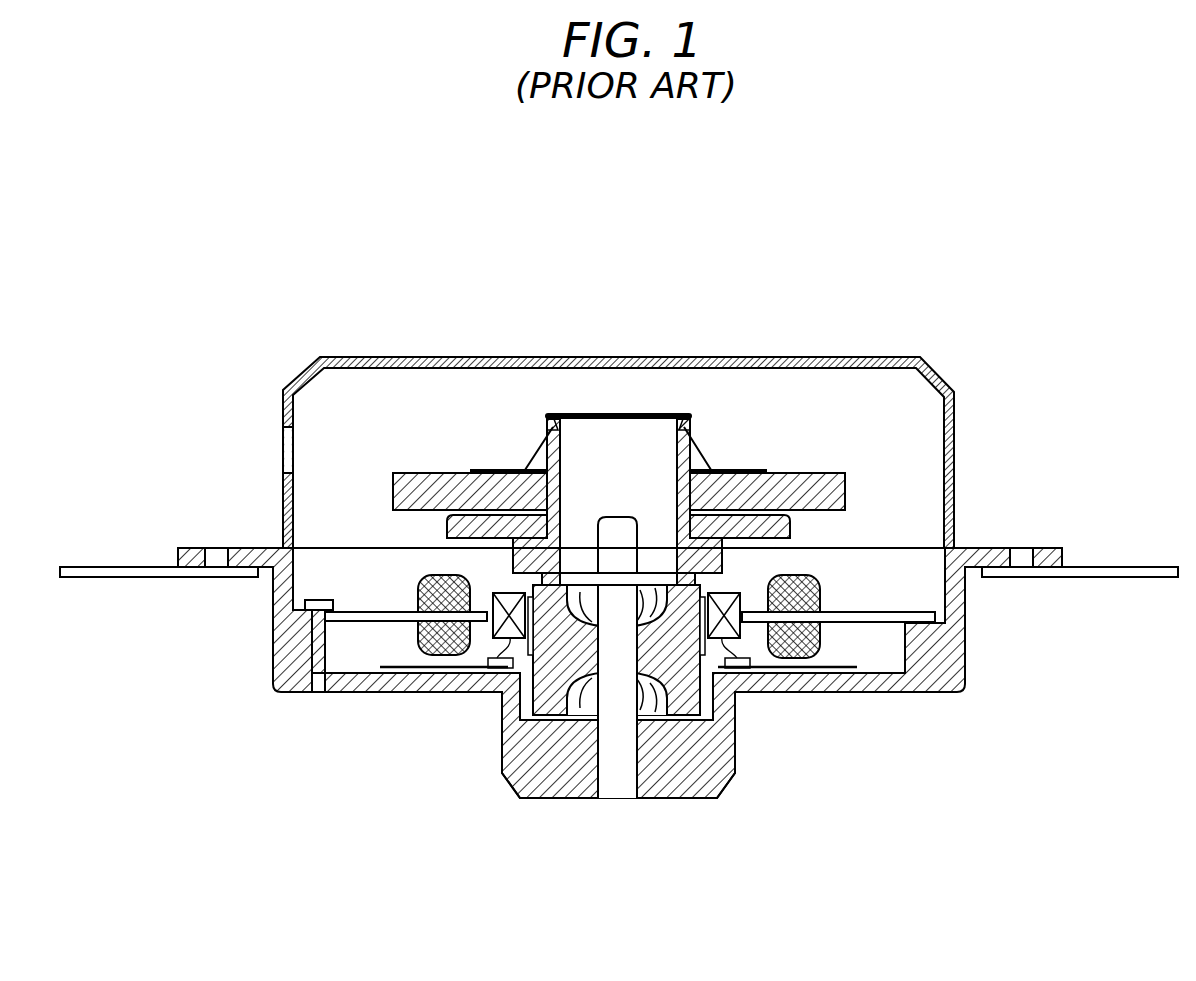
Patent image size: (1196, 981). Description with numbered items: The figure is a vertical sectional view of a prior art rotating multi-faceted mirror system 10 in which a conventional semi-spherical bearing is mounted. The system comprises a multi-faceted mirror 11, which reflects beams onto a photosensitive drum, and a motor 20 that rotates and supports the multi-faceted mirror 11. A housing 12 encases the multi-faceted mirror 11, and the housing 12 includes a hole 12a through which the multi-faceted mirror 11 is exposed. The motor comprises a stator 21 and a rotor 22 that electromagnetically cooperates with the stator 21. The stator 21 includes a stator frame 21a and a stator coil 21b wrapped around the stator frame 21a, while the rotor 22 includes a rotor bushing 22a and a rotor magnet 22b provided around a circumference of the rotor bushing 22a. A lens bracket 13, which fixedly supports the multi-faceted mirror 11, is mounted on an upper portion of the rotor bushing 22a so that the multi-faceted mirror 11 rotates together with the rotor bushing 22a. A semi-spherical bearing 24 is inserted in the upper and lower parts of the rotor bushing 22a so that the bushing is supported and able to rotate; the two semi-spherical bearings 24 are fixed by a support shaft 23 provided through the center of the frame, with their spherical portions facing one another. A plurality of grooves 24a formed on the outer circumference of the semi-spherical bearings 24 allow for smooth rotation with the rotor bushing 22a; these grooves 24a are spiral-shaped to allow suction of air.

The rotating multi-faceted mirror system 10 is at (855, 305).
The multi-faceted mirror 11 is at (845, 487).
The housing 12 is at (953, 397).
The hole 12a is at (285, 443).
The lens bracket 13 is at (790, 532).
The motor 20 is at (488, 574).
The stator 21 is at (168, 644).
The stator frame 21a is at (283, 621).
The stator coil 21b is at (415, 633).
The rotor 22 is at (397, 797).
The rotor bushing 22a is at (547, 692).
The rotor magnet 22b is at (500, 696).
The support shaft 23 is at (622, 788).
The semi-spherical bearing 24 is at (580, 708).
The grooves 24a is at (657, 707).